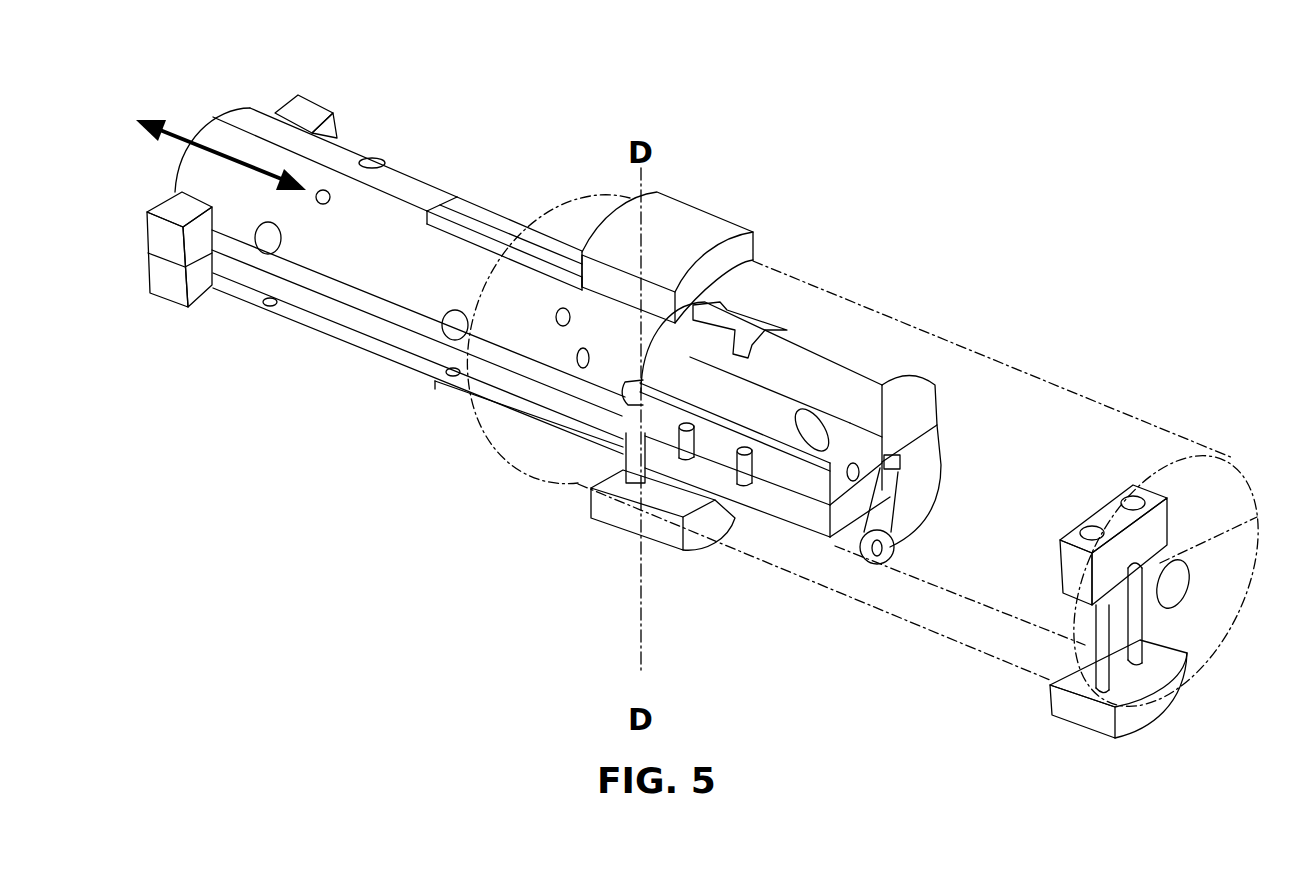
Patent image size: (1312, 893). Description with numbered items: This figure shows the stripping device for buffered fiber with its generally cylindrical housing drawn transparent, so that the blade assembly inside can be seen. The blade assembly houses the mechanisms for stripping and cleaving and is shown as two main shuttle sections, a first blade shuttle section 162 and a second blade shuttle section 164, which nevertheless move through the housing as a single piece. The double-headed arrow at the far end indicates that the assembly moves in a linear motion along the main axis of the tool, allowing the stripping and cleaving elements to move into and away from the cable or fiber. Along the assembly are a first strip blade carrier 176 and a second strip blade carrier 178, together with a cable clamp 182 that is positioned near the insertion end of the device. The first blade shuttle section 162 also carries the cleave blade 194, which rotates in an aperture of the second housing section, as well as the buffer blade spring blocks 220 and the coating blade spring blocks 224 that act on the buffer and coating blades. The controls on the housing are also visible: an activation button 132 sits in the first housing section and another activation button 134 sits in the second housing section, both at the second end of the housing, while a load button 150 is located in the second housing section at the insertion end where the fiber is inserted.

The activation button 132 is at (722, 238).
The activation button 134 is at (675, 537).
The load button 150 is at (1120, 723).
The first blade shuttle section 162 is at (315, 327).
The second blade shuttle section 164 is at (425, 190).
The first strip blade carrier 176 is at (785, 370).
The second strip blade carrier 178 is at (853, 347).
The cable clamp 182 is at (1117, 510).
The cleave blade 194 is at (886, 562).
The buffer blade spring blocks 220 is at (683, 455).
The coating blade spring blocks 224 is at (743, 478).